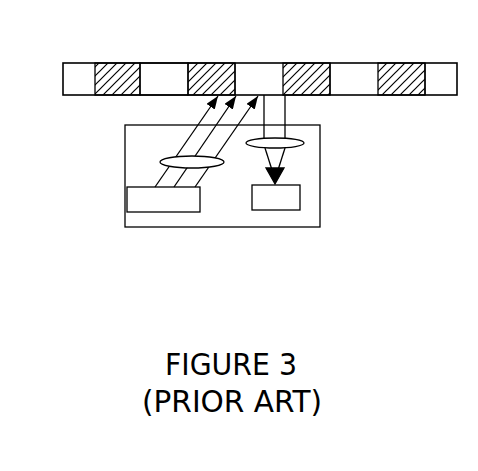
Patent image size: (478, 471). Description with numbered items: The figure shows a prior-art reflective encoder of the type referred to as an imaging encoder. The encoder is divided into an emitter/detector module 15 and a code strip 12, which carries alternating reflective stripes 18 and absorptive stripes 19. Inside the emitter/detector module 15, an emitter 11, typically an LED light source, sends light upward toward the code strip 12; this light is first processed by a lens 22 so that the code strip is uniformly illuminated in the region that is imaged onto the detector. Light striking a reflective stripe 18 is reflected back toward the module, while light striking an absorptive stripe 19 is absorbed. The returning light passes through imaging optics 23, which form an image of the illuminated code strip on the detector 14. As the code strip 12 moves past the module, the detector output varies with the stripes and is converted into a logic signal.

The emitter 11 is at (173, 208).
The code strip 12 is at (267, 91).
The detector 14 is at (265, 208).
The emitter/detector module 15 is at (321, 208).
The reflective stripes 18 is at (163, 61).
The absorptive stripes 19 is at (112, 61).
The lens 22 is at (165, 161).
The imaging optics 23 is at (310, 138).